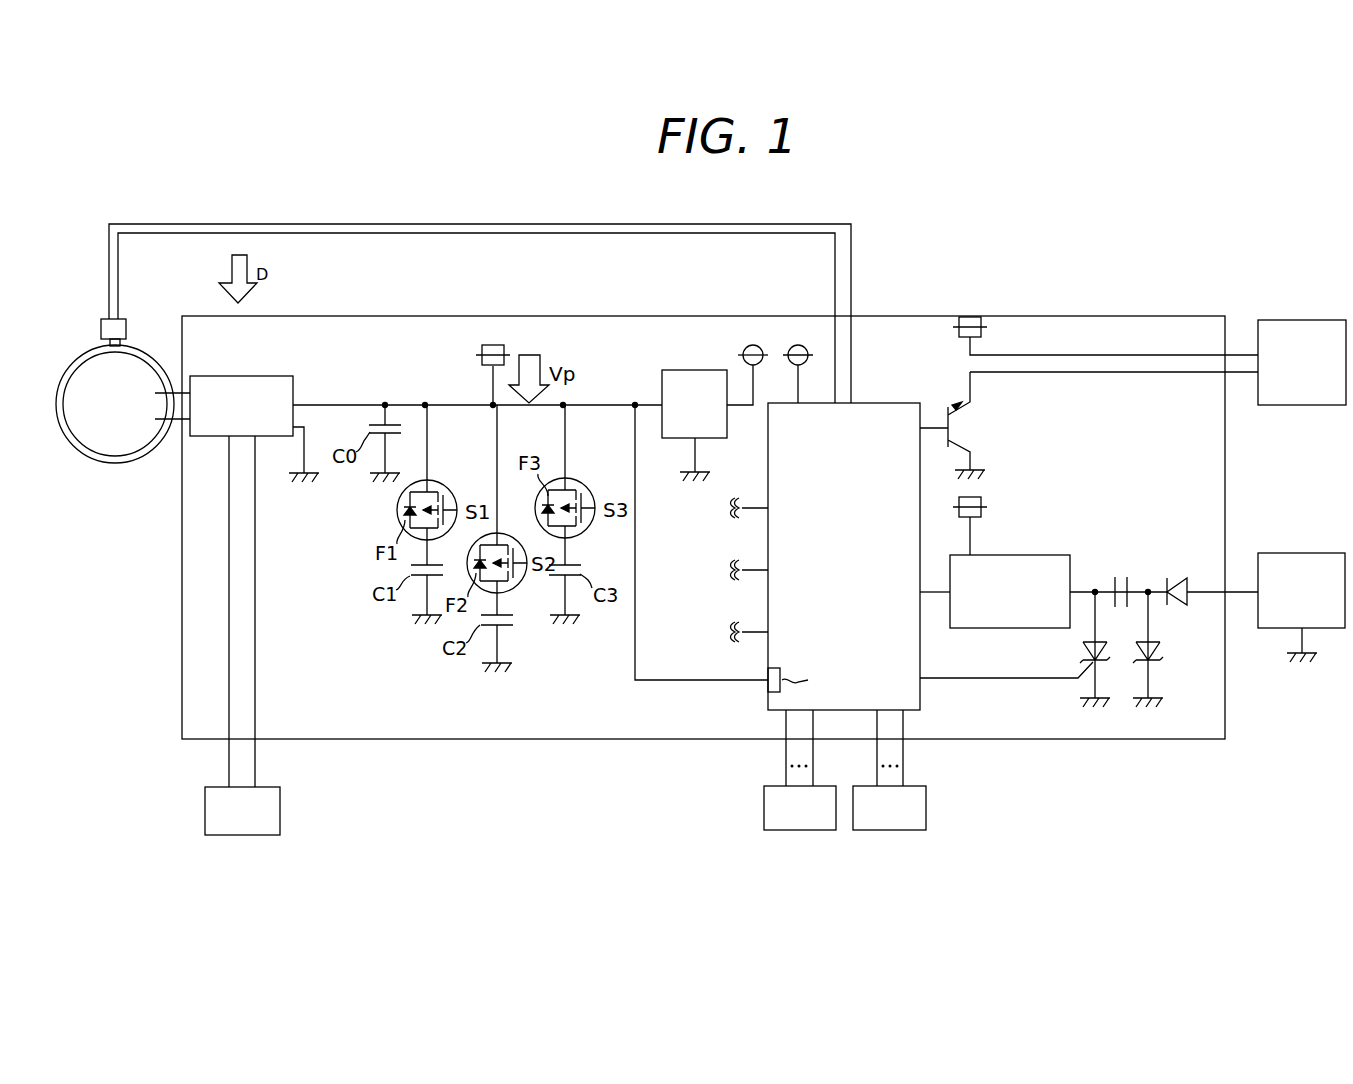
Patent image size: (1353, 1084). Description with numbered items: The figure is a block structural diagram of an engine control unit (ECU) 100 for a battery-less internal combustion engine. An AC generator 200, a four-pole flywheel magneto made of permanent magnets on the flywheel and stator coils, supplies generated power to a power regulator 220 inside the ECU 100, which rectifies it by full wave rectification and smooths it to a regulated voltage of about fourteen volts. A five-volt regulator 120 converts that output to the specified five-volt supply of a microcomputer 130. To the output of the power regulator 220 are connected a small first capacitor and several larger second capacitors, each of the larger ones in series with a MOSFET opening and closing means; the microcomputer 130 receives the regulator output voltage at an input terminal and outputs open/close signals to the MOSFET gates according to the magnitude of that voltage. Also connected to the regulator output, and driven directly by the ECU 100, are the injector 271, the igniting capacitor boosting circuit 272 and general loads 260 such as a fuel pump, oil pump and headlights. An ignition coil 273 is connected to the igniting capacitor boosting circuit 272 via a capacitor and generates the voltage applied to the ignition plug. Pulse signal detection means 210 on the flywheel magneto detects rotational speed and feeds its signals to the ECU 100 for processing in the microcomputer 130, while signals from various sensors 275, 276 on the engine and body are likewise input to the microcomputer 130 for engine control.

The engine control unit (ECU) 100 is at (405, 316).
The 5V regulator 120 is at (695, 370).
The microcomputer 130 is at (890, 403).
The AC generator 200 is at (112, 464).
The pulse signal detection means 210 is at (126, 320).
The power regulator 220 is at (240, 376).
The general loads 260 is at (240, 835).
The injector (fuel injection device) 271 is at (1308, 320).
The igniting capacitor boosting circuit 272 is at (1050, 555).
The ignition coil 273 is at (1307, 553).
The sensor 275 is at (764, 808).
The sensor 276 is at (926, 808).